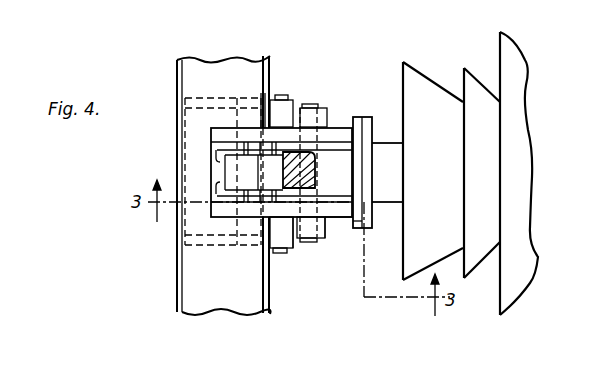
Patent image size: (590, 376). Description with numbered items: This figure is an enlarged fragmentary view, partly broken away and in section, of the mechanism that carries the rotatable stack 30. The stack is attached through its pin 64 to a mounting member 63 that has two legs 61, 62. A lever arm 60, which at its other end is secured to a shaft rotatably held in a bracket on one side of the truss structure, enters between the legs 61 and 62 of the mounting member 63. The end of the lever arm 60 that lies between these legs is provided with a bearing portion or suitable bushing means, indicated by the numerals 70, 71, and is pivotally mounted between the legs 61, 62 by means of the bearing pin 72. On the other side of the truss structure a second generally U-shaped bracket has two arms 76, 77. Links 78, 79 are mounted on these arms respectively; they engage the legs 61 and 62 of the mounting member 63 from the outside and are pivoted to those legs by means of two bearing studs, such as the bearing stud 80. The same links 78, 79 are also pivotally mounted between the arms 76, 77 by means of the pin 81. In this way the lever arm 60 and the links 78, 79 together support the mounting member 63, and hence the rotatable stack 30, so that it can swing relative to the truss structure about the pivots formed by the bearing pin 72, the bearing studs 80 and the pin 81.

The rotatable stack 30 is at (528, 158).
The lever arm 60 is at (316, 160).
The leg of mounting member 61 is at (338, 130).
The leg of mounting member 62 is at (340, 214).
The mounting member 63 is at (356, 230).
The pin 64 is at (383, 142).
The bearing portion 70 is at (236, 146).
The bushing means 71 is at (243, 206).
The bearing pin 72 is at (220, 166).
The arm of U-shaped bracket 76 is at (293, 102).
The arm of U-shaped bracket 77 is at (295, 243).
The link 78 is at (308, 112).
The link 79 is at (324, 238).
The bearing stud 80 is at (308, 243).
The pin 81 is at (282, 254).